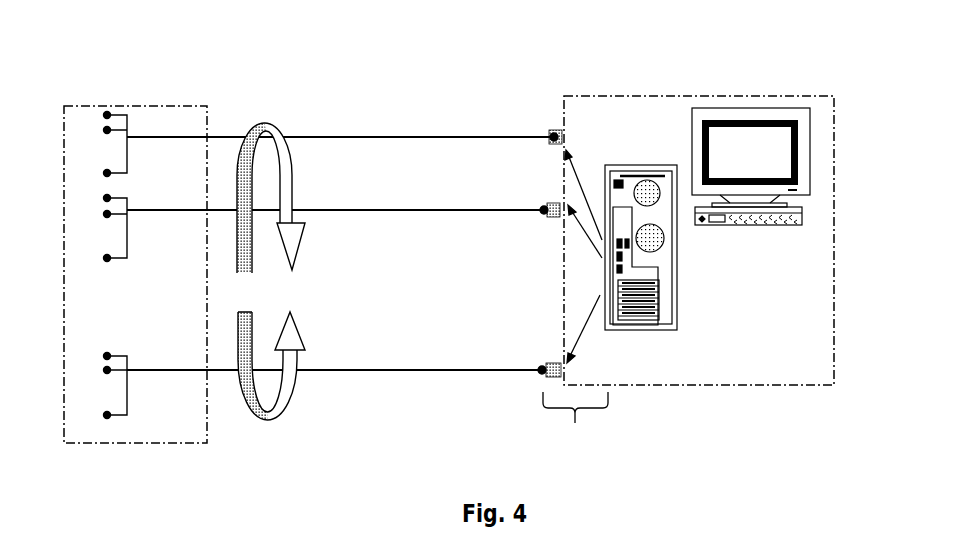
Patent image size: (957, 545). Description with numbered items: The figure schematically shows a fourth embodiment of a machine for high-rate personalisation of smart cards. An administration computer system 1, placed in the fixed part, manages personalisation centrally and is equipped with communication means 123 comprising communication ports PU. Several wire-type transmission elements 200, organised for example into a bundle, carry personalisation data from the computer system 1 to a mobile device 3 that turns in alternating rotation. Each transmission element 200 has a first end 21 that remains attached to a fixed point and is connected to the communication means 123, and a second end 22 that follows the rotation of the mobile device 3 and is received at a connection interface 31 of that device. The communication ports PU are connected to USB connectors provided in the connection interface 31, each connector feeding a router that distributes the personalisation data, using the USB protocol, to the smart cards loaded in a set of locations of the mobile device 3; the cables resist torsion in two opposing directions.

The administration computer system 1 is at (728, 377).
The mobile device 3 is at (182, 450).
The first end 21 is at (543, 132).
The second end 22 is at (210, 130).
The connection interface 31 is at (132, 217).
The communication means 123 is at (576, 424).
The transmission element 200 is at (352, 377).
The communication ports PU is at (565, 133).